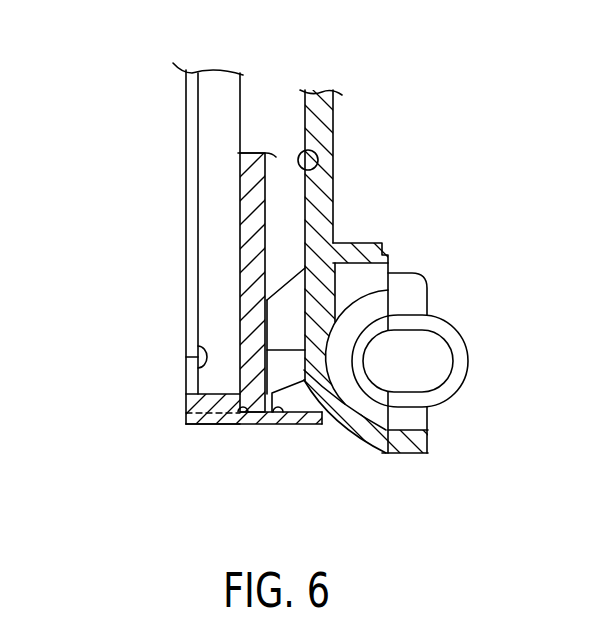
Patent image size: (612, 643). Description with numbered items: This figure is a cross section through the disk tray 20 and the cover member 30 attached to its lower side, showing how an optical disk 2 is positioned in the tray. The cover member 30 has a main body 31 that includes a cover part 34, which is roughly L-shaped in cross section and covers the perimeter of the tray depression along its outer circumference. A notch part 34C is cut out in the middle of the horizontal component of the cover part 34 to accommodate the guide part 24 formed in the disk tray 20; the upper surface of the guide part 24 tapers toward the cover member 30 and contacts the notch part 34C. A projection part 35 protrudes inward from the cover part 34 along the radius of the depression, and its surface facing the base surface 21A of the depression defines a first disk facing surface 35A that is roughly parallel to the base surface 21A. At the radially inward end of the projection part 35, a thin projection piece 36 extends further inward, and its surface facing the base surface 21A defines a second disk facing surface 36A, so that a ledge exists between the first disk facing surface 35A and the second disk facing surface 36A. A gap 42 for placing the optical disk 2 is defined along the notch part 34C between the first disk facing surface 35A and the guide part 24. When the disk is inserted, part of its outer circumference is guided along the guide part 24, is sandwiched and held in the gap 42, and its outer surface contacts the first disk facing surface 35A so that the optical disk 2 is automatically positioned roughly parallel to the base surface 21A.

The optical disk 2 is at (247, 184).
The disk tray 20 is at (323, 128).
The base surface 21A is at (318, 165).
The guide part 24 is at (316, 426).
The cover member 30 is at (191, 113).
The main body 31 is at (187, 413).
The cover part 34 is at (205, 427).
The notch part 34C is at (300, 398).
The projection part 35 is at (188, 400).
The first disk facing surface 35A is at (250, 423).
The projection piece 36 is at (188, 372).
The second disk facing surface 36A is at (193, 375).
The gap 42 is at (281, 364).